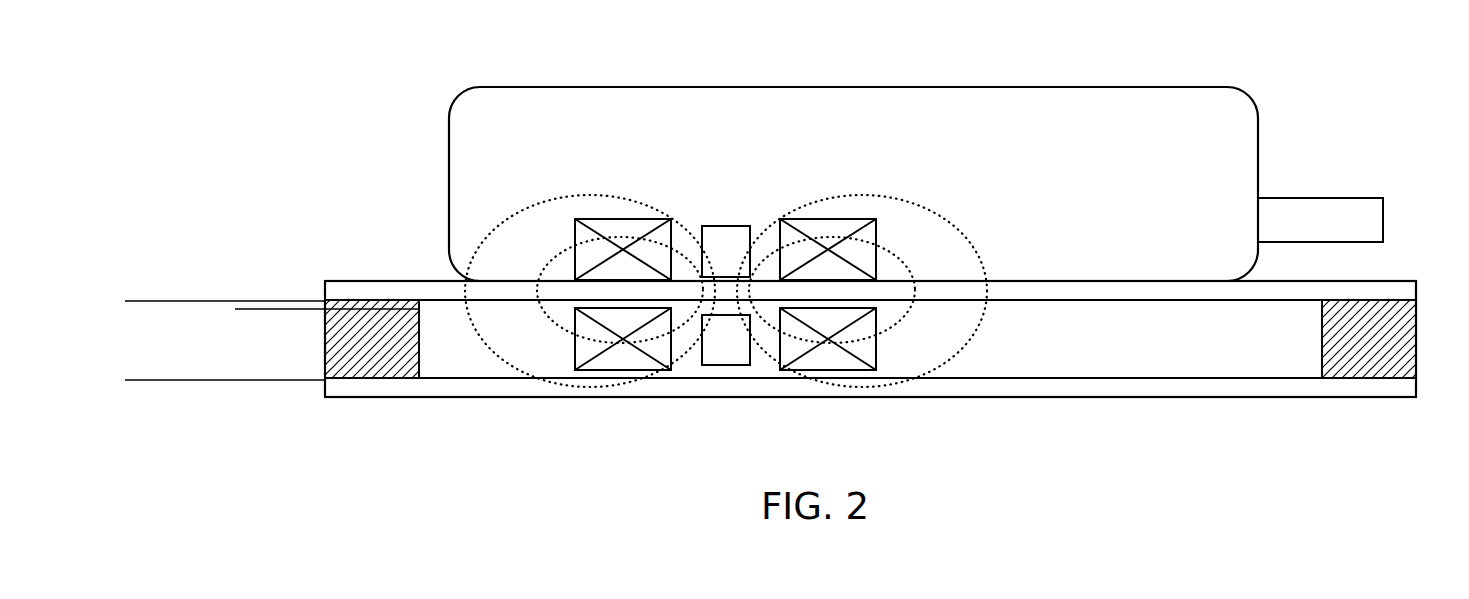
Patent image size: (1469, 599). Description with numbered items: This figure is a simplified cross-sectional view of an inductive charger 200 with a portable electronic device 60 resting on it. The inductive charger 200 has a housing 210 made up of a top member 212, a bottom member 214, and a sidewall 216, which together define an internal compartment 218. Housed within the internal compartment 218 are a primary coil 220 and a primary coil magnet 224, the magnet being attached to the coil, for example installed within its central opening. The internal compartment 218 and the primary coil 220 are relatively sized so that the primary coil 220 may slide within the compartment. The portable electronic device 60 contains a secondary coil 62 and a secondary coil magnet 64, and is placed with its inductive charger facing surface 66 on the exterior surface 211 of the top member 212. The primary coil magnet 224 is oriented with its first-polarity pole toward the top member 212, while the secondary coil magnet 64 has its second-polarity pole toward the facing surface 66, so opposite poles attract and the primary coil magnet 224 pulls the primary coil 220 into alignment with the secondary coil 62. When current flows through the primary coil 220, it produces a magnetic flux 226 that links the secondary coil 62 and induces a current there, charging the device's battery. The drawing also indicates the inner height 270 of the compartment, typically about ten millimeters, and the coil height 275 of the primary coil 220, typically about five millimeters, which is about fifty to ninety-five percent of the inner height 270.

The portable electronic device 60 is at (1233, 88).
The secondary coil 62 is at (829, 219).
The secondary coil magnet 64 is at (740, 226).
The inductive charger facing surface 66 is at (1192, 282).
The inductive charger 200 is at (835, 286).
The housing 210 is at (403, 281).
The exterior surface 211 is at (1320, 205).
The top member 212 is at (1388, 285).
The bottom member 214 is at (1346, 388).
The sidewall 216 is at (1400, 338).
The internal compartment 218 is at (1103, 361).
The primary coil 220 is at (831, 362).
The primary coil magnet 224 is at (713, 366).
The magnetic flux 226 is at (743, 298).
The inner height 270 is at (127, 301).
The coil height 275 is at (235, 278).